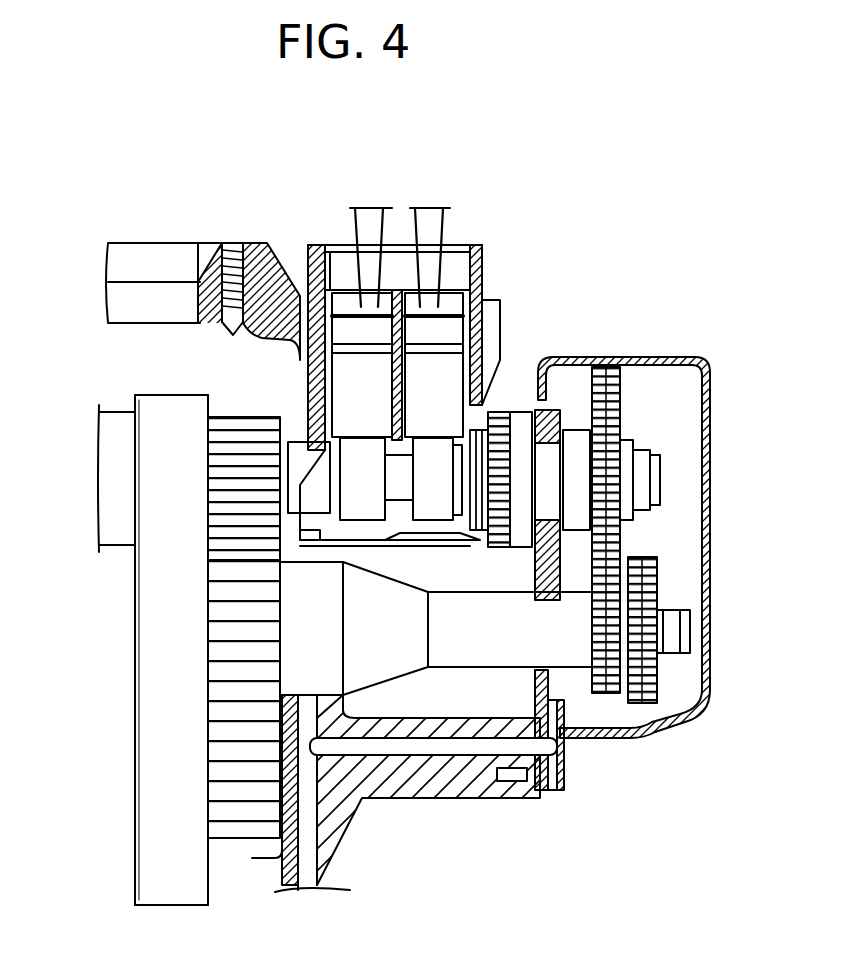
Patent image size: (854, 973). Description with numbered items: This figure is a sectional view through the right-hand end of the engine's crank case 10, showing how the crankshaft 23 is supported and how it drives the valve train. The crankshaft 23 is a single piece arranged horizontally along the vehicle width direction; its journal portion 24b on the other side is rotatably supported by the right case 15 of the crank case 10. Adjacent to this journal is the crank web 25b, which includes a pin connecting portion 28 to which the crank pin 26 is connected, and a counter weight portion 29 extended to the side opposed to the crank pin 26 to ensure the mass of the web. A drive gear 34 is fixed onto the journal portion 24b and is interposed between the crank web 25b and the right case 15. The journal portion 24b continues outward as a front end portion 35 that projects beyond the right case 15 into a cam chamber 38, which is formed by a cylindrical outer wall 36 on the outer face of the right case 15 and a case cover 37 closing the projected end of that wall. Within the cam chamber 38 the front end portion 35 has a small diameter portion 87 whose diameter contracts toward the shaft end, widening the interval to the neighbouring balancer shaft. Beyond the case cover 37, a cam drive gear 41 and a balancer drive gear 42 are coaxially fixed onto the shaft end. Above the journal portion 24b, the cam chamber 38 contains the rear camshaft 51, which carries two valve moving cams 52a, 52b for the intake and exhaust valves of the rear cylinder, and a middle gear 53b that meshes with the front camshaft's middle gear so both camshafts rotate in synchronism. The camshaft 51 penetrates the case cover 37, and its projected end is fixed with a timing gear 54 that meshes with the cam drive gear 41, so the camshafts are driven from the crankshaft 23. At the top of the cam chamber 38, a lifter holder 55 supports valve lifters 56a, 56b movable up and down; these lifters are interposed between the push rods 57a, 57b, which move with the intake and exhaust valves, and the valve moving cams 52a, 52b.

The crank case 10 is at (330, 862).
The right case 15 is at (212, 315).
The crankshaft 23 is at (130, 697).
The journal portion 24b is at (310, 605).
The crank web 25b is at (153, 628).
The crank pin 26 is at (118, 505).
The pin connecting portion 28 is at (125, 447).
The counter weight portion 29 is at (152, 843).
The drive gear 34 is at (233, 837).
The front end portion 35 is at (488, 647).
The outer wall 36 is at (485, 795).
The case cover 37 is at (552, 430).
The cam chamber 38 is at (441, 705).
The cam drive gear 41 is at (607, 693).
The balancer drive gear 42 is at (648, 707).
The camshaft 51 is at (287, 435).
The valve moving cam 52a is at (432, 457).
The valve moving cam 52b is at (360, 457).
The middle gear 53b is at (505, 410).
The timing gear 54 is at (626, 400).
The lifter holder 55 is at (345, 327).
The valve lifter 56a is at (443, 337).
The valve lifter 56b is at (297, 298).
The push rod 57a is at (440, 228).
The push rod 57b is at (365, 228).
The small diameter portion 87 is at (390, 593).